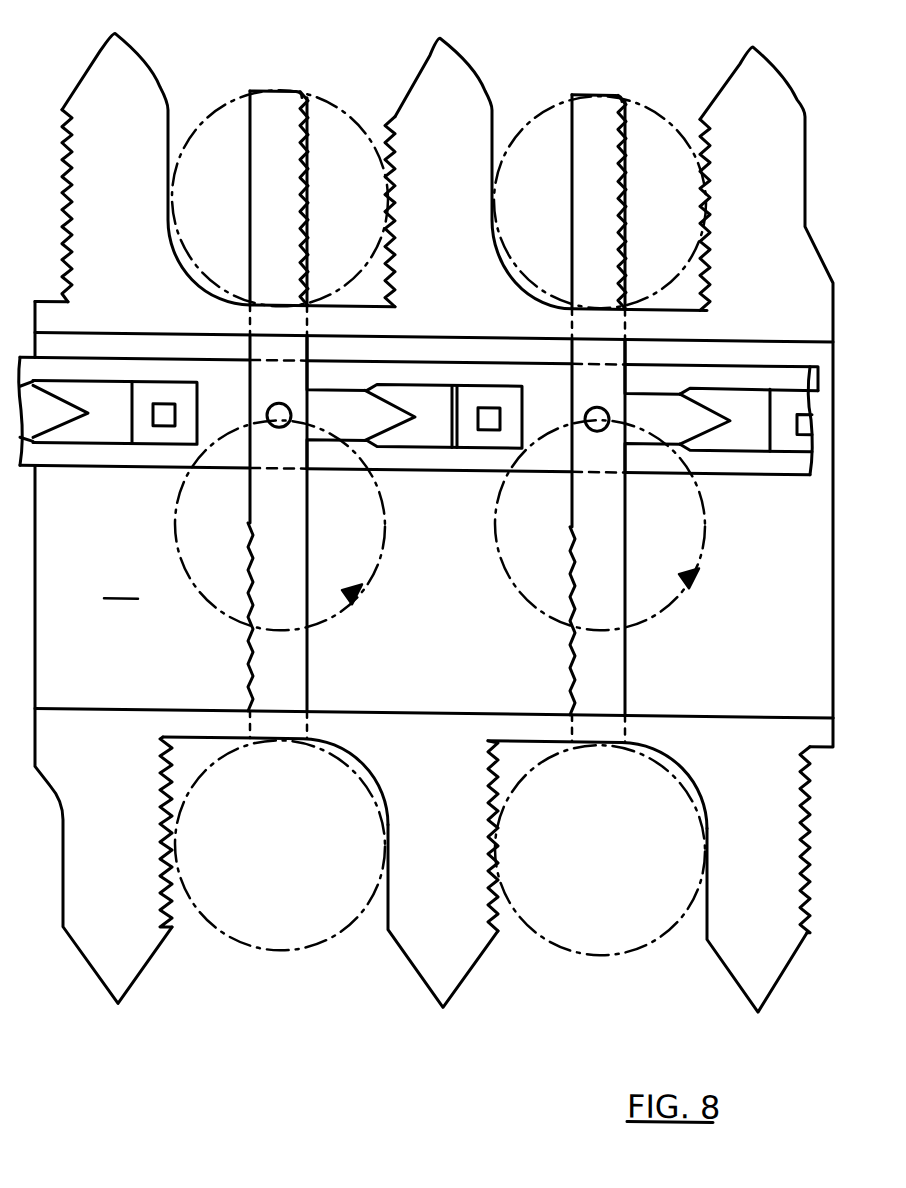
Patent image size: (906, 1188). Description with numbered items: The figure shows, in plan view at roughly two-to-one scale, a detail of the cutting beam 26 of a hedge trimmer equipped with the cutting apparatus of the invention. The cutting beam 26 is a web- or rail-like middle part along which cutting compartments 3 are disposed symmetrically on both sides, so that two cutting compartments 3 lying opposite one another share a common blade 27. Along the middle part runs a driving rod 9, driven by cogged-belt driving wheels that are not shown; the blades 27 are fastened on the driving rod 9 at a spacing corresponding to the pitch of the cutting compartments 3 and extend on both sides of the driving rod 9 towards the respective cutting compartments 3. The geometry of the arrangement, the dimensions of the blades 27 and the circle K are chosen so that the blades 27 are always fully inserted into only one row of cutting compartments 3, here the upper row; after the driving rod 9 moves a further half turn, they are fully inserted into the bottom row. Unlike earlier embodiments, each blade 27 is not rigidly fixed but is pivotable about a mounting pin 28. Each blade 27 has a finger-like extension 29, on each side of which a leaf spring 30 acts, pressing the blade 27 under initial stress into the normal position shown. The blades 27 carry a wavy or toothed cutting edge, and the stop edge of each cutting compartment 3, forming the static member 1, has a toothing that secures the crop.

The static member 1 is at (380, 155).
The cutting compartment 3 is at (540, 181).
The driving rod 9 is at (120, 367).
The cutting beam 26 is at (434, 522).
The blade 27 is at (270, 110).
The mounting pin 28 is at (273, 425).
The finger-like extension 29 is at (338, 418).
The leaf spring 30 is at (447, 438).
The circle K is at (220, 97).